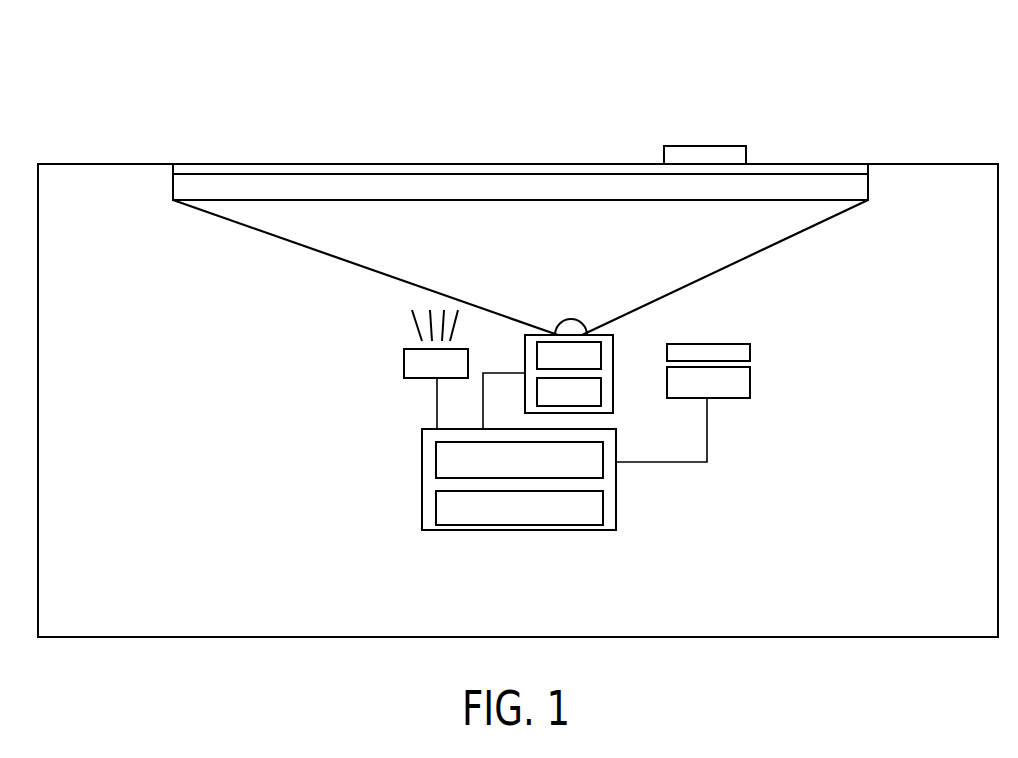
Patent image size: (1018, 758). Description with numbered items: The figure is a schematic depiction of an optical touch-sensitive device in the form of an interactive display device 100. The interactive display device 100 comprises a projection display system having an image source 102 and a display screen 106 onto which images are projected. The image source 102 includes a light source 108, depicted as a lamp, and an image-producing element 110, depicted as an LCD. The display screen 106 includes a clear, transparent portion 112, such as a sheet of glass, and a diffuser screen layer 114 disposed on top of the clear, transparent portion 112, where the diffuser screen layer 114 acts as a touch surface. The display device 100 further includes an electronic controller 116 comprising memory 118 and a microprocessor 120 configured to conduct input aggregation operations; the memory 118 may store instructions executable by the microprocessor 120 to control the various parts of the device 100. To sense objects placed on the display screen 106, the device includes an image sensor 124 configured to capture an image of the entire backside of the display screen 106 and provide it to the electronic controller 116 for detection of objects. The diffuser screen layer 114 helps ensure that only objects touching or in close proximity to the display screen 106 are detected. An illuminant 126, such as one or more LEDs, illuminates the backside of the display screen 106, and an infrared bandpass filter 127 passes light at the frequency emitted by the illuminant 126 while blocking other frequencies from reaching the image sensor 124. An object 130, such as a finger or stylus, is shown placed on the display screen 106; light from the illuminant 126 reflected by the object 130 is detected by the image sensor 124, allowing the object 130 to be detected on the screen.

The interactive display device 100 is at (124, 96).
The image source 102 is at (613, 353).
The display screen 106 is at (227, 164).
The light source 108 is at (603, 389).
The image-producing element 110 is at (525, 353).
The clear, transparent portion 112 is at (311, 187).
The diffuser screen layer 114 is at (382, 167).
The electronic controller 116 is at (422, 497).
The memory 118 is at (436, 458).
The microprocessor 120 is at (603, 503).
The image sensor 124 is at (740, 381).
The illuminant 126 is at (404, 363).
The infrared bandpass filter 127 is at (740, 352).
The object 130 is at (677, 155).